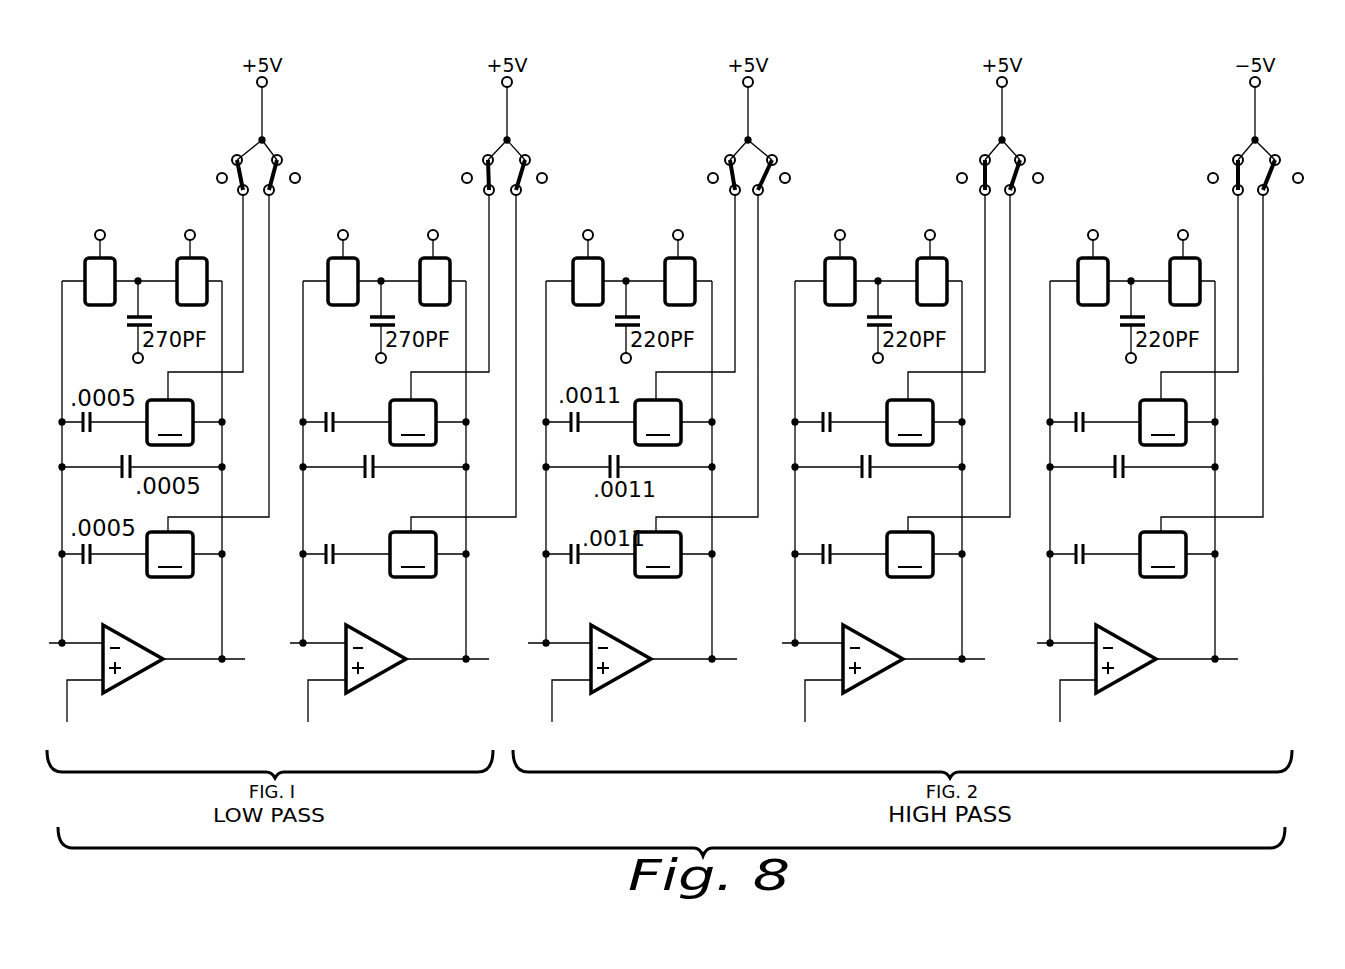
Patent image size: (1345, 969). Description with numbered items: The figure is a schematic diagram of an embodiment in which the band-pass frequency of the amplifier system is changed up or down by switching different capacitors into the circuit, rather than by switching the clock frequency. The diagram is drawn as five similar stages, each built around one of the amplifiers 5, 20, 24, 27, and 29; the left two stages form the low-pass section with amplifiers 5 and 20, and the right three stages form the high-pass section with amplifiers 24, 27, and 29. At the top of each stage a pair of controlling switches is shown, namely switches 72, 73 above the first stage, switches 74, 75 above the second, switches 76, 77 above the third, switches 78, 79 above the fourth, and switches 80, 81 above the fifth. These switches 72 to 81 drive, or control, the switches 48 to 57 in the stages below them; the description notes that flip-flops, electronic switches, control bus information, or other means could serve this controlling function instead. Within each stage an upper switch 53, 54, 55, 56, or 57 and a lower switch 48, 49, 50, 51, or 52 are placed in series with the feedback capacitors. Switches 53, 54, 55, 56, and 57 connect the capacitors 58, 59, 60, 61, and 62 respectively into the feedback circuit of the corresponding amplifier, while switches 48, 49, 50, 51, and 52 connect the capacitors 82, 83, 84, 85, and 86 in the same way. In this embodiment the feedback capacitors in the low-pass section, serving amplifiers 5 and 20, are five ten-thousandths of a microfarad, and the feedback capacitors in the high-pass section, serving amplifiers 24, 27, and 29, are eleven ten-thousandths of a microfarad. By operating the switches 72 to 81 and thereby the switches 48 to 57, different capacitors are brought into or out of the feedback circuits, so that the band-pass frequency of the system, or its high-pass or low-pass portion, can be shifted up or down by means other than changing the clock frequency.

The switch 72 is at (235, 157).
The switch 73 is at (280, 157).
The switch 74 is at (484, 157).
The switch 75 is at (528, 157).
The switch 76 is at (727, 157).
The switch 77 is at (775, 157).
The switch 78 is at (980, 160).
The switch 79 is at (1024, 158).
The switch 80 is at (1233, 160).
The switch 81 is at (1280, 158).
The switch 53 is at (170, 422).
The switch 54 is at (413, 422).
The switch 55 is at (658, 422).
The switch 56 is at (910, 422).
The switch 57 is at (1163, 422).
The switch 48 is at (170, 554).
The switch 49 is at (413, 554).
The switch 50 is at (658, 554).
The switch 51 is at (910, 554).
The switch 52 is at (1163, 554).
The capacitor 58 is at (84, 433).
The capacitor 59 is at (327, 433).
The capacitor 60 is at (579, 433).
The capacitor 61 is at (831, 433).
The capacitor 62 is at (1084, 433).
The capacitor 82 is at (84, 565).
The capacitor 83 is at (327, 565).
The capacitor 84 is at (579, 565).
The capacitor 85 is at (831, 565).
The capacitor 86 is at (1084, 565).
The amplifier 5 is at (138, 679).
The amplifier 20 is at (381, 679).
The amplifier 24 is at (626, 679).
The amplifier 27 is at (885, 675).
The amplifier 29 is at (1135, 677).